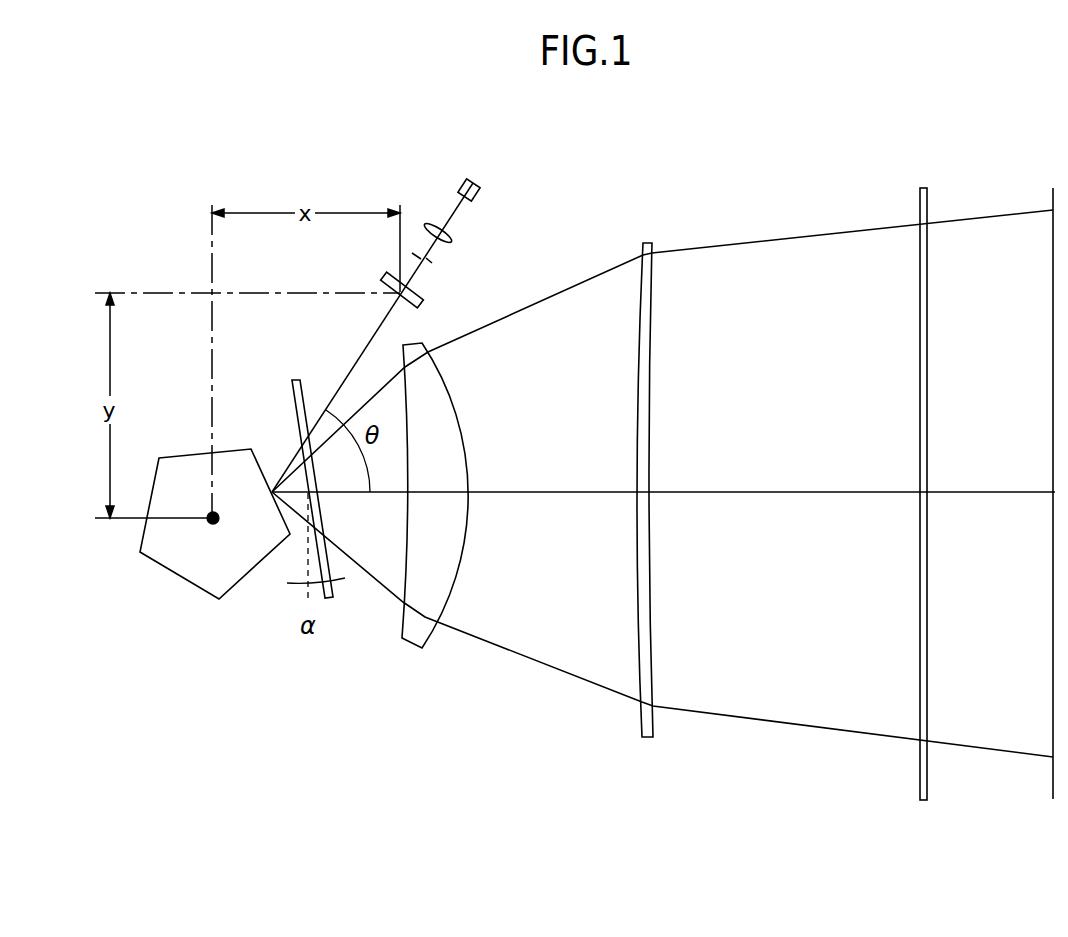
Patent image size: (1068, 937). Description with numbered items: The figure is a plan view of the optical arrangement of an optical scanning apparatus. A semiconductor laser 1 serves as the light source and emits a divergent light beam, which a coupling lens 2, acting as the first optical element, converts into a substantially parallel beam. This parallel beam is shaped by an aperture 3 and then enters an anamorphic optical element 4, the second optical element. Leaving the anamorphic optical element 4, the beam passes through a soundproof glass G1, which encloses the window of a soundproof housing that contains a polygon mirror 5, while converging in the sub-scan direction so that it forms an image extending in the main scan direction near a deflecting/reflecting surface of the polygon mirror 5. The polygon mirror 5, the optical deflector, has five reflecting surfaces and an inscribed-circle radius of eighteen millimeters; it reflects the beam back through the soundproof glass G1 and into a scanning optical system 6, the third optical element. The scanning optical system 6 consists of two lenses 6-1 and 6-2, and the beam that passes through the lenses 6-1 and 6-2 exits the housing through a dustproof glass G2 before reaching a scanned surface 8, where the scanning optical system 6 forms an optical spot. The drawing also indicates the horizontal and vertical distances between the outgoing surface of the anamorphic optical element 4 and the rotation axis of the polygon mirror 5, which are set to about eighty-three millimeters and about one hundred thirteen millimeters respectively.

The semiconductor laser 1 is at (476, 183).
The coupling lens 2 is at (447, 242).
The aperture 3 is at (430, 263).
The anamorphic optical element 4 is at (413, 302).
The polygon mirror 5 is at (190, 588).
The soundproof glass G1 is at (328, 602).
The scanning optical system 6 is at (527, 549).
The lens 6-1 is at (420, 640).
The lens 6-2 is at (610, 520).
The dustproof glass G2 is at (920, 388).
The scanned surface 8 is at (1053, 402).